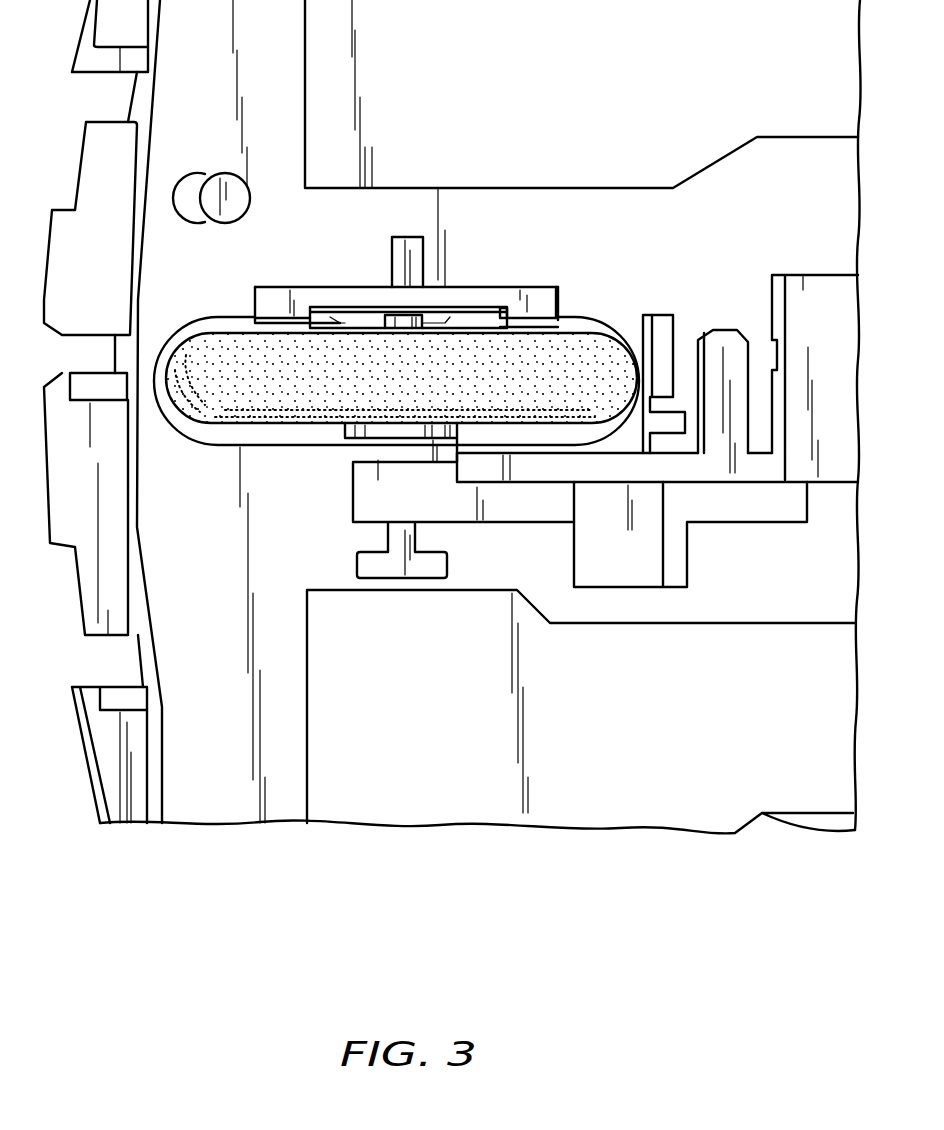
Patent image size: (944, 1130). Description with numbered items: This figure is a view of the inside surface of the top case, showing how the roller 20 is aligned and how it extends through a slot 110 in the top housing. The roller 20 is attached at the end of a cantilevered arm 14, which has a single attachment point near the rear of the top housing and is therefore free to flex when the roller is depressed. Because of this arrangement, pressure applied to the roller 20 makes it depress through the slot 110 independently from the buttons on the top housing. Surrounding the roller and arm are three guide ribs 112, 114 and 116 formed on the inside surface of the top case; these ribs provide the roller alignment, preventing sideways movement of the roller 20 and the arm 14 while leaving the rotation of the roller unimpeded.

The arm 14 is at (832, 420).
The roller 20 is at (168, 376).
The slot 110 is at (176, 428).
The guide rib 112 is at (357, 565).
The guide rib 114 is at (542, 308).
The guide rib 116 is at (283, 284).